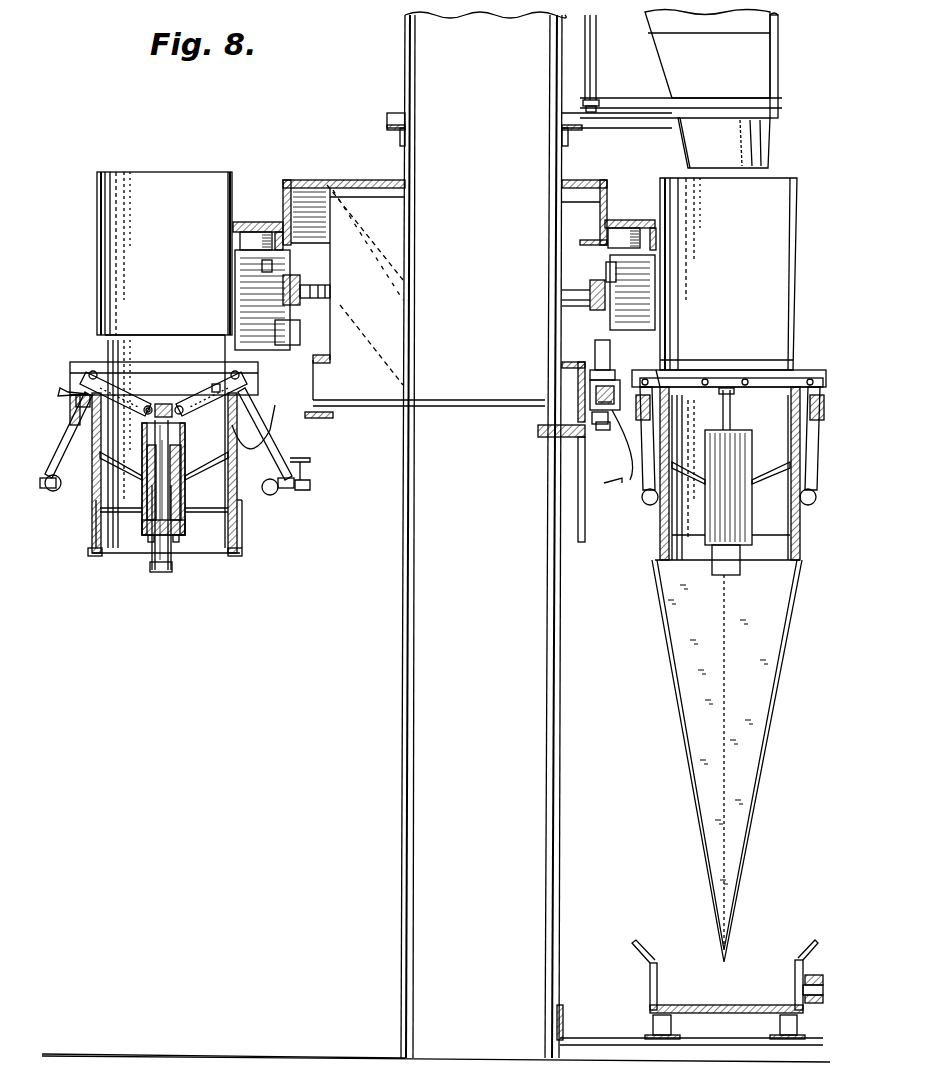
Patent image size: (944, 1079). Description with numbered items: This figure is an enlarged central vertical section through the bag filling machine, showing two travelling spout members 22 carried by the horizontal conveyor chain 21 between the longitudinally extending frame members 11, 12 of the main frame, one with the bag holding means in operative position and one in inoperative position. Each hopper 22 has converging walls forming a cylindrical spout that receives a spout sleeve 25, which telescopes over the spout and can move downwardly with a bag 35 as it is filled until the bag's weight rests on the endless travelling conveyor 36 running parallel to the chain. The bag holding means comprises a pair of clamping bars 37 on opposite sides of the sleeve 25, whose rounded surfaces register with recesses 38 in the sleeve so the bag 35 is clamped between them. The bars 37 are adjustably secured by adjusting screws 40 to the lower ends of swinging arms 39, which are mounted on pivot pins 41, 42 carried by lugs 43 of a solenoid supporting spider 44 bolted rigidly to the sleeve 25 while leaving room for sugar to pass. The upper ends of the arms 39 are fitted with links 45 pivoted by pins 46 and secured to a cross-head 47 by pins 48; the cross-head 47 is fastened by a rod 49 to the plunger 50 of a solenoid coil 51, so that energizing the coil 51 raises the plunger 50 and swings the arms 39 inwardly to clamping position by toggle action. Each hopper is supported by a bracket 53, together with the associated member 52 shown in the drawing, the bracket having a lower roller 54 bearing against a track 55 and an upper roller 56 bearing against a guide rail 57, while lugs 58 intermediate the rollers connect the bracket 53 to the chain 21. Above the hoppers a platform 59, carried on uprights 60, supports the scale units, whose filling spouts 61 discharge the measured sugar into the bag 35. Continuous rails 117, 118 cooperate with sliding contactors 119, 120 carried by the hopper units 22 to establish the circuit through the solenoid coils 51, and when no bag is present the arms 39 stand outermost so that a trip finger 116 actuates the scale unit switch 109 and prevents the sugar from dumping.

The longitudinally extending frame member 11 is at (312, 224).
The longitudinally extending frame member 12 is at (600, 222).
The conveyor chain 21 is at (302, 292).
The travelling spout member 22 is at (208, 196).
The spout sleeve 25 is at (238, 514).
The bag 35 is at (658, 634).
The endless travelling conveyor 36 is at (672, 962).
The clamping bar 37 is at (52, 495).
The recess 38 is at (98, 492).
The swinging arm 39 is at (52, 460).
The adjusting screw 40 is at (305, 486).
The pivot pin 41 is at (78, 400).
The pivot pin 42 is at (216, 385).
The lug 43 is at (92, 414).
The solenoid supporting spider 44 is at (100, 472).
The link 45 is at (120, 392).
The pin 46 is at (91, 368).
The cross-head 47 is at (172, 405).
The pin 48 is at (148, 405).
The rod 49 is at (96, 530).
The plunger 50 is at (165, 560).
The solenoid coil 51 is at (150, 512).
The bracket 52 is at (790, 370).
The bracket 53 is at (600, 272).
The roller 54 is at (597, 350).
The track 55 is at (580, 388).
The roller 56 is at (256, 236).
The guide rail 57 is at (233, 229).
The lug 58 is at (600, 312).
The platform 59 is at (746, 108).
The upright 60 is at (522, 824).
The filling spout 61 is at (762, 146).
The scale unit switch 109 is at (580, 530).
The trip finger 116 is at (312, 462).
The rail 117 is at (595, 395).
The rail 118 is at (596, 430).
The sliding contactor 119 is at (603, 400).
The sliding contactor 120 is at (604, 426).